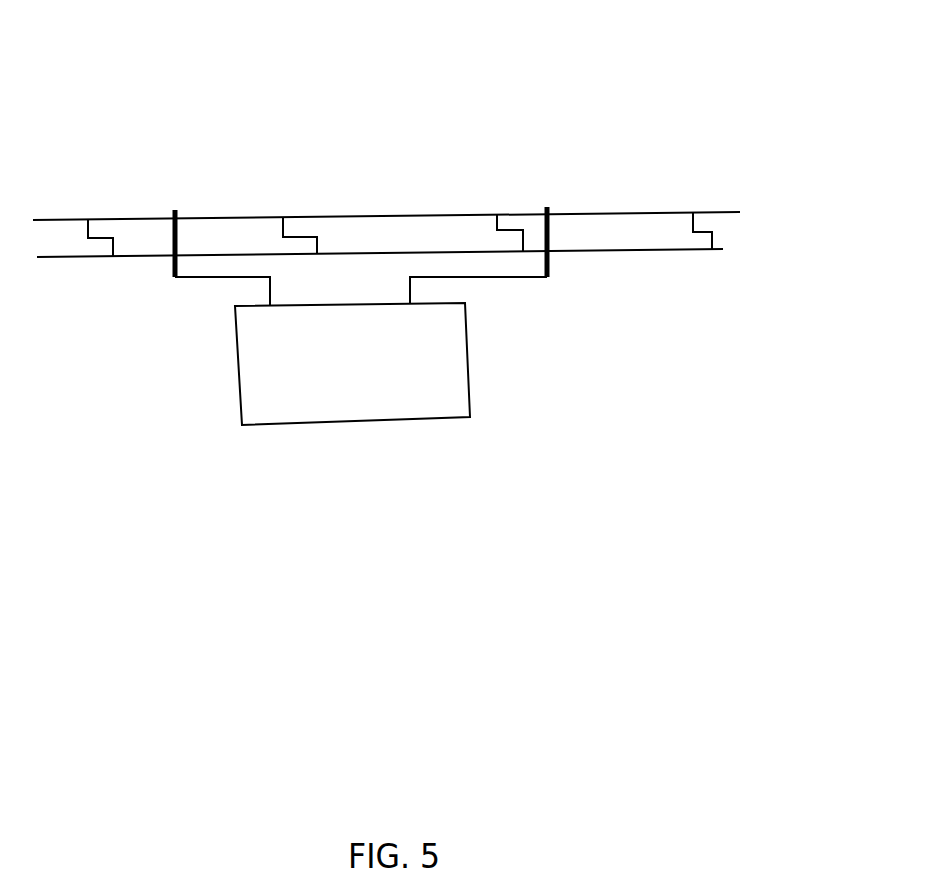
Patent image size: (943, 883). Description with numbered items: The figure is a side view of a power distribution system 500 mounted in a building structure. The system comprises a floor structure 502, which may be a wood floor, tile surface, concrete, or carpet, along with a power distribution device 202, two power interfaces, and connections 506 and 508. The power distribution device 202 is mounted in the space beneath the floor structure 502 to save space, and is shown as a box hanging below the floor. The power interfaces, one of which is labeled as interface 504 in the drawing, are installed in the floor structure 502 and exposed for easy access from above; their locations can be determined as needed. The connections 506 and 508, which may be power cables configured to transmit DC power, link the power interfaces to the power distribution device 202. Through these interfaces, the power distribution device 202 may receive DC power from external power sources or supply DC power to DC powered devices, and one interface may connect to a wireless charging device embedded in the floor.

The power distribution system 500 is at (703, 120).
The floor structure 502 is at (740, 212).
The first sensor 504 is at (180, 212).
The connection 506 is at (546, 207).
The connection 508 is at (545, 277).
The power distribution device 202 is at (473, 380).